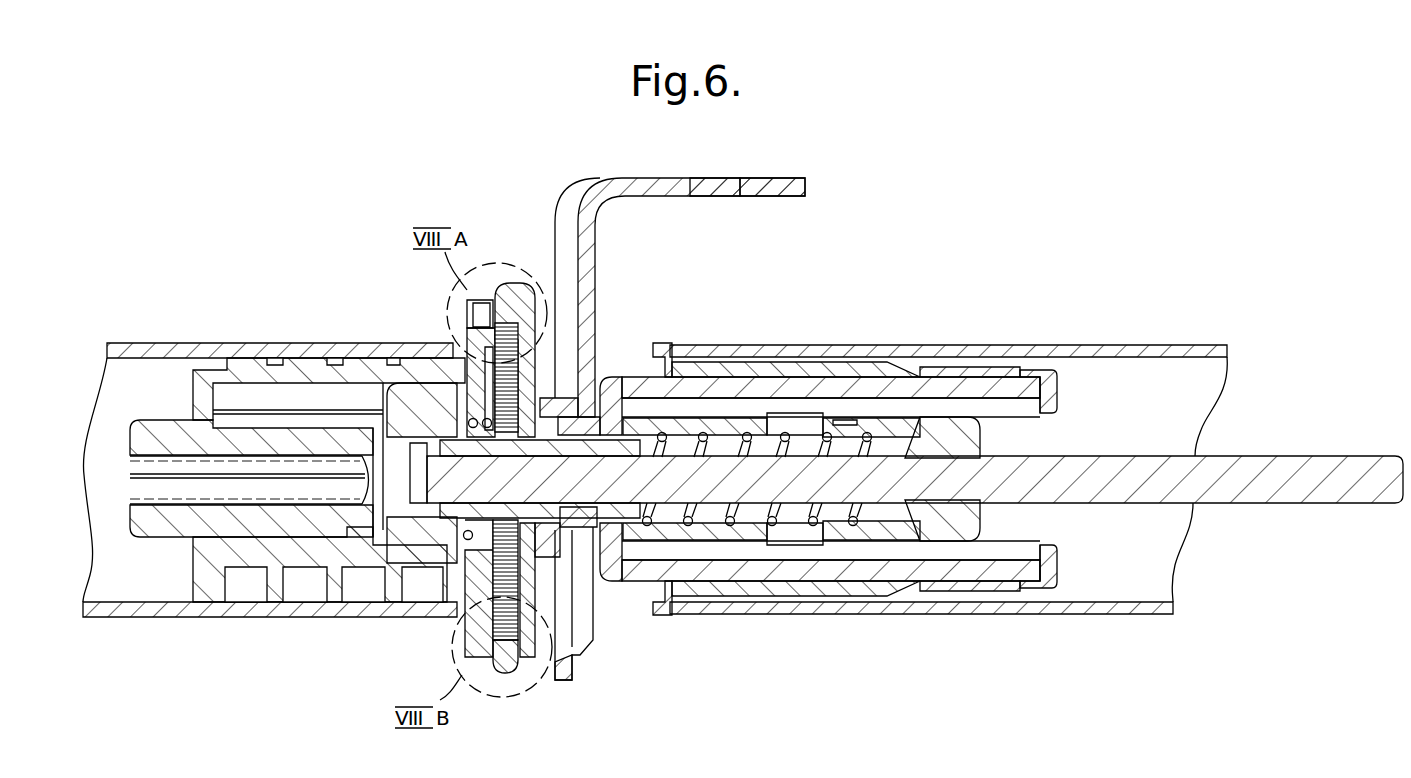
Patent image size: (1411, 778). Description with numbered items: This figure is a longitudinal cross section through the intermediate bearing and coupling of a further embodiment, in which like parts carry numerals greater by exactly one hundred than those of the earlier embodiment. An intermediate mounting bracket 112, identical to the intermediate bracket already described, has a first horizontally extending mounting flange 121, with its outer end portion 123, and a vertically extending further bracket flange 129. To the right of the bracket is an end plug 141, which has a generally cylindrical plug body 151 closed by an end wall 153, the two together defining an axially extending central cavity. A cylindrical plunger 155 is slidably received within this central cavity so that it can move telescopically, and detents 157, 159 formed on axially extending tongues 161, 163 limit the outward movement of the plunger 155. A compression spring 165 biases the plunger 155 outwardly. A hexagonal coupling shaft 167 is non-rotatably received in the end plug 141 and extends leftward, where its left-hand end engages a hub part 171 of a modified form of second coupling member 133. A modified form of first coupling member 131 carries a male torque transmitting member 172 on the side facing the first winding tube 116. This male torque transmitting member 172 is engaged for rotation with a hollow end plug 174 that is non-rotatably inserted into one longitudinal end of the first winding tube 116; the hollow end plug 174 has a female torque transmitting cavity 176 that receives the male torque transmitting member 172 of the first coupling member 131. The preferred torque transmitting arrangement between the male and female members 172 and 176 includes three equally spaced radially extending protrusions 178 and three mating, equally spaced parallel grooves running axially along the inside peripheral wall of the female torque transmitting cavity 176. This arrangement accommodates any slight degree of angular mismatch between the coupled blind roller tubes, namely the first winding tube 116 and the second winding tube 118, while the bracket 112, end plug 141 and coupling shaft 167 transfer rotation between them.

The intermediate mounting bracket 112 is at (556, 181).
The first winding tube 116 is at (157, 617).
The second winding tube 118 is at (1128, 614).
The first horizontally extending mounting flange 121 is at (712, 183).
The bracket end 123 is at (757, 178).
The vertically extending further bracket flange 129 is at (565, 673).
The first coupling member 131 is at (457, 600).
The second coupling member 133 is at (512, 673).
The end plug 141 is at (628, 604).
The cylindrical plug body 151 is at (897, 363).
The end wall 153 is at (970, 443).
The cylindrical plunger 155 is at (633, 378).
The detent 157 is at (1040, 383).
The detent 159 is at (1033, 577).
The axially extending tongue 161 is at (953, 377).
The axially extending tongue 163 is at (947, 577).
The compression spring 165 is at (805, 542).
The hexagonal coupling shaft 167 is at (1338, 484).
The hub part 171 is at (413, 468).
The male torque transmitting member 172 is at (420, 540).
The hollow end plug 174 is at (190, 390).
The female torque transmitting cavity 176 is at (362, 390).
The radially extending protrusions 178 is at (427, 386).